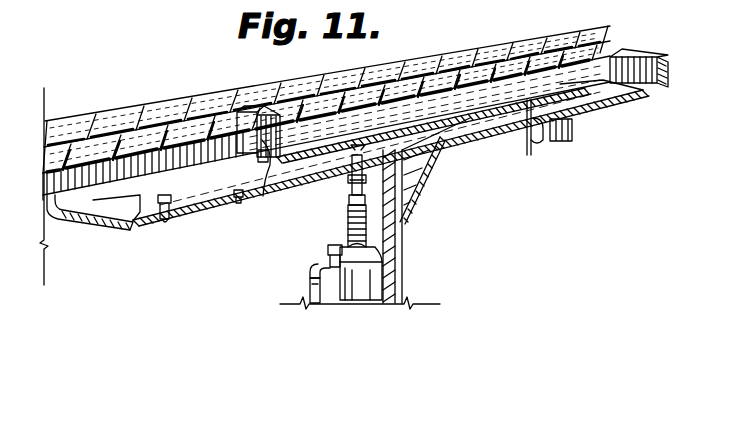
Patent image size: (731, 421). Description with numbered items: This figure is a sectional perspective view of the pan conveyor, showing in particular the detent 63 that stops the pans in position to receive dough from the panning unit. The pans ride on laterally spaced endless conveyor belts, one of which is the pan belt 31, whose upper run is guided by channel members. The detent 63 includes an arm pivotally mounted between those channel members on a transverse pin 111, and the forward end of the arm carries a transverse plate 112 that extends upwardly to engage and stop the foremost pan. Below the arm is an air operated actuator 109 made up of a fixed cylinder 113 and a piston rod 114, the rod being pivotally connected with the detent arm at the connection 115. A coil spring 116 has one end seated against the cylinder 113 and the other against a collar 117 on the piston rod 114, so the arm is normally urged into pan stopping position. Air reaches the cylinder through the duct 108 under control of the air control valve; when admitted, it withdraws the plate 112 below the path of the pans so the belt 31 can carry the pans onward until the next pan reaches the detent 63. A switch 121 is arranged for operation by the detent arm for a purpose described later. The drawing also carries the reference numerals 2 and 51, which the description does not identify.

The column 2 is at (400, 223).
The endless conveyor belt 31 is at (112, 113).
The beam 51 is at (62, 194).
The pan detent 63 is at (260, 179).
The duct 108 is at (313, 273).
The air operated actuator 109 is at (380, 256).
The transverse pin 111 is at (573, 109).
The transverse plate 112 is at (243, 117).
The fixed cylinder 113 is at (340, 294).
The piston rod 114 is at (427, 148).
The pivotal connection 115 is at (348, 177).
The coil spring 116 is at (368, 219).
The collar 117 is at (366, 198).
The switch 121 is at (546, 141).